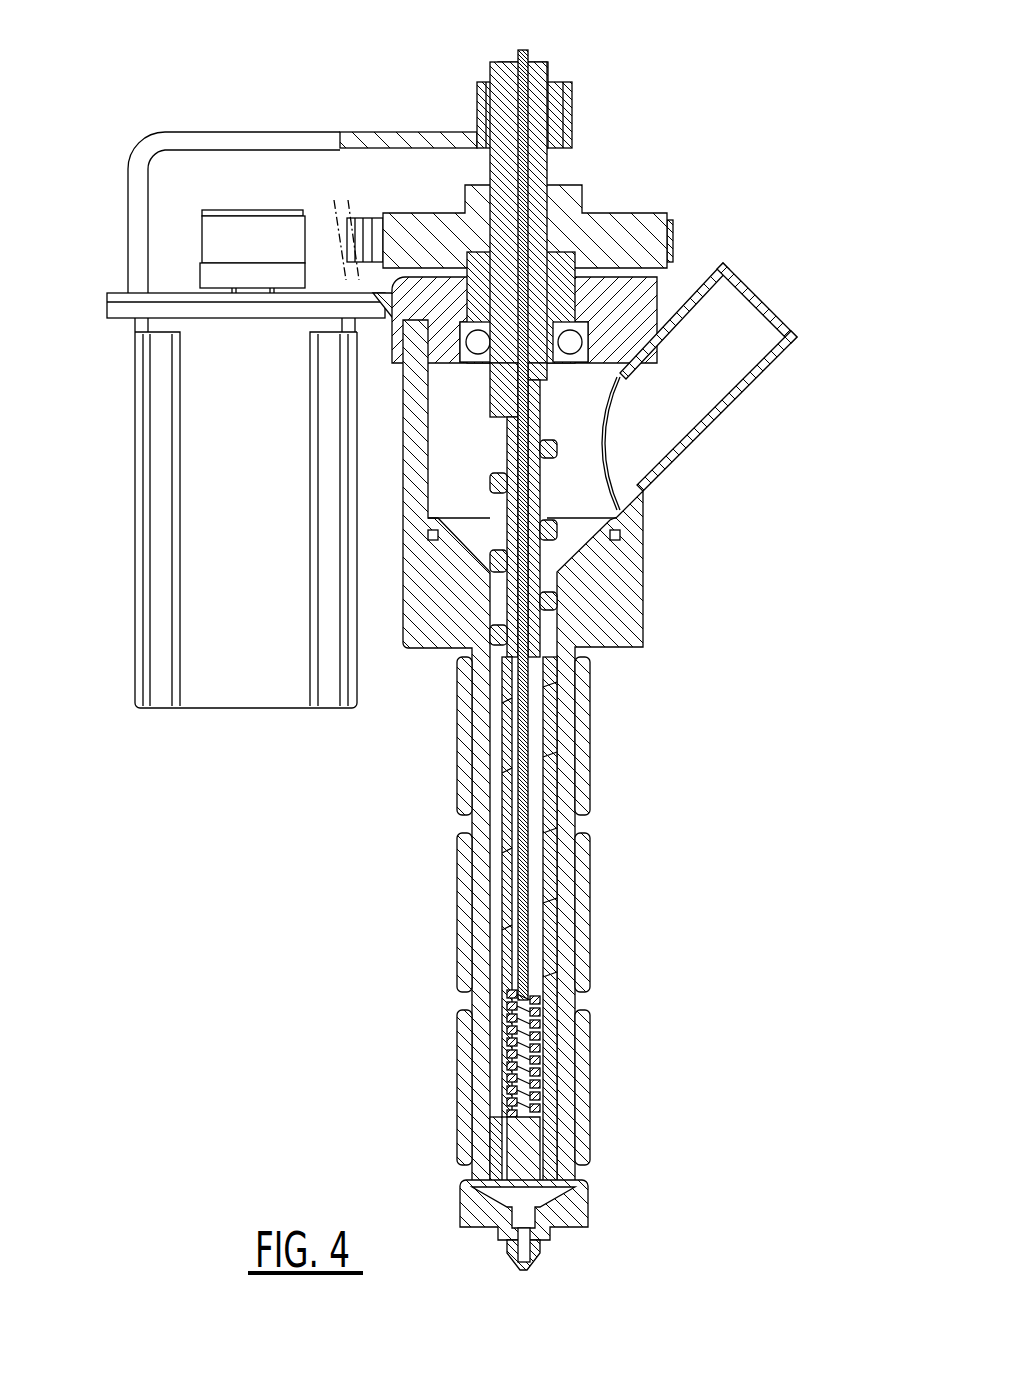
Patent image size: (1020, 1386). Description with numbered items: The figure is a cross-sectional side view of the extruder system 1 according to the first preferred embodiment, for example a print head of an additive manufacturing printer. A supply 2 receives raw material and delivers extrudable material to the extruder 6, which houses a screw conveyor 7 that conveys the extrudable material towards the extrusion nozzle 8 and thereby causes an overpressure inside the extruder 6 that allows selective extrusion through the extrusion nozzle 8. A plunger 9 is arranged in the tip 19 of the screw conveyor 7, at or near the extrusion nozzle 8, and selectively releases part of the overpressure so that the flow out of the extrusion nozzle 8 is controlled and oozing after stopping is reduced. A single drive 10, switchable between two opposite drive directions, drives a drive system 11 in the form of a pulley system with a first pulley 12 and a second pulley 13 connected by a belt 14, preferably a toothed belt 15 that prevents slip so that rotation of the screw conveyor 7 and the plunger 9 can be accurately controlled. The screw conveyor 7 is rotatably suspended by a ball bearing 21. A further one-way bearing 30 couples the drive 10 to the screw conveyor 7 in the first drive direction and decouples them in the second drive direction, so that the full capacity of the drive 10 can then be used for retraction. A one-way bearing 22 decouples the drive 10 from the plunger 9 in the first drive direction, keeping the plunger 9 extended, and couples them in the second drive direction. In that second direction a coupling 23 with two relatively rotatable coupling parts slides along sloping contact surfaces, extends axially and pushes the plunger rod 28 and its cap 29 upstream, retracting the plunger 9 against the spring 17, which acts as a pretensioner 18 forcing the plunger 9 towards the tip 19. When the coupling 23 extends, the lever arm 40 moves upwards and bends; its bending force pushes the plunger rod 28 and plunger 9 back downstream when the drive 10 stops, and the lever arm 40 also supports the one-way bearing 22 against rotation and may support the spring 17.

The extruder system 1 is at (707, 75).
The supply 2 is at (737, 357).
The extruder 6 is at (563, 830).
The screw conveyor 7 is at (547, 747).
The extrusion nozzle 8 is at (523, 1265).
The plunger 9 is at (522, 1153).
The drive 10 is at (208, 573).
The drive system 11 is at (283, 185).
The first pulley 12 is at (252, 208).
The second pulley 13 is at (637, 233).
The belt 14 is at (560, 175).
The toothed belt 15 is at (667, 240).
The spring 17 is at (613, 1047).
The pretensioner 18 is at (537, 1038).
The tip 19 is at (553, 1187).
The ball bearing 21 is at (570, 345).
The one-way bearing 22 is at (558, 110).
The coupling 23 is at (565, 167).
The plunger rod 28 is at (512, 68).
The cap 29 is at (525, 50).
The further one-way bearing 30 is at (555, 287).
The lever arm 40 is at (400, 130).